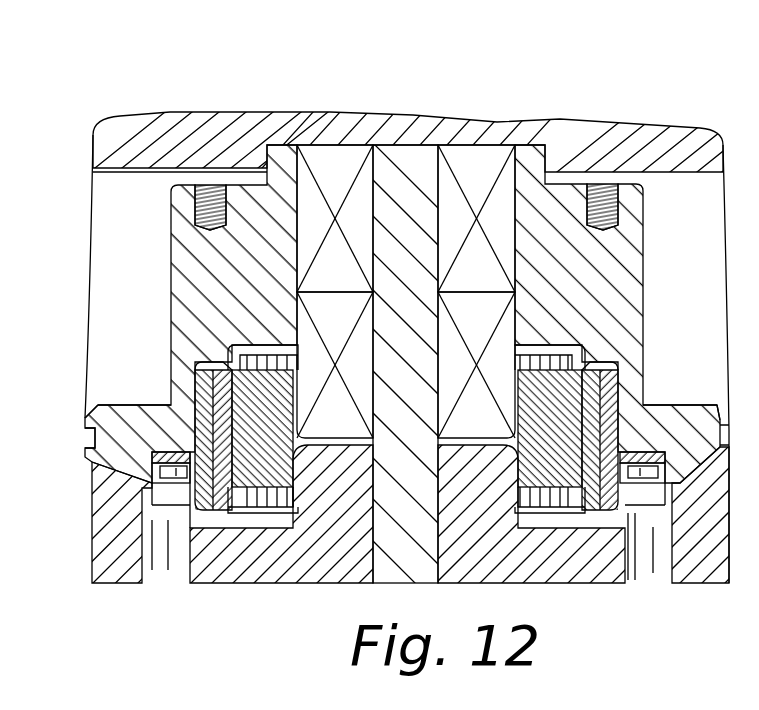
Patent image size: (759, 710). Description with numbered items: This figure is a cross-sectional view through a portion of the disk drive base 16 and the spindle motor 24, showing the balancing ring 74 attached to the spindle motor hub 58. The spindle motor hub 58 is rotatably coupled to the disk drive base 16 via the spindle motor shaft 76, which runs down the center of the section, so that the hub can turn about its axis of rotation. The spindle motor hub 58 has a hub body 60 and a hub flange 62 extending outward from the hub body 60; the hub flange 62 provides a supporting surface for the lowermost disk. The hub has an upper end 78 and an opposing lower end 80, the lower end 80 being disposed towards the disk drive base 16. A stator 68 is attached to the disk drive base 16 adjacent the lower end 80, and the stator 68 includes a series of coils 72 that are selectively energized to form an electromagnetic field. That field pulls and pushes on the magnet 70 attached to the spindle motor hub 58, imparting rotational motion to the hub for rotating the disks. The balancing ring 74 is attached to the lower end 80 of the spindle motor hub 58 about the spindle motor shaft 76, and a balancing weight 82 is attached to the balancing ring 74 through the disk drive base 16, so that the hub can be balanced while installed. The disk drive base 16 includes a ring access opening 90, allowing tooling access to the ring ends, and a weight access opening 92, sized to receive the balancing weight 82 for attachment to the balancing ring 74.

The disk drive base 16 is at (296, 585).
The spindle motor 24 is at (204, 86).
The spindle motor hub 58 is at (178, 223).
The hub body 60 is at (178, 252).
The hub flange 62 is at (107, 417).
The stator 68 is at (562, 390).
The magnet 70 is at (593, 390).
The coils 72 is at (252, 345).
The balancing ring 74 is at (152, 458).
The spindle motor shaft 76 is at (395, 178).
The upper end 78 is at (552, 213).
The lower end 80 is at (152, 418).
The balancing weight 82 is at (150, 484).
The ring access opening 90 is at (648, 595).
The weight access opening 92 is at (160, 595).